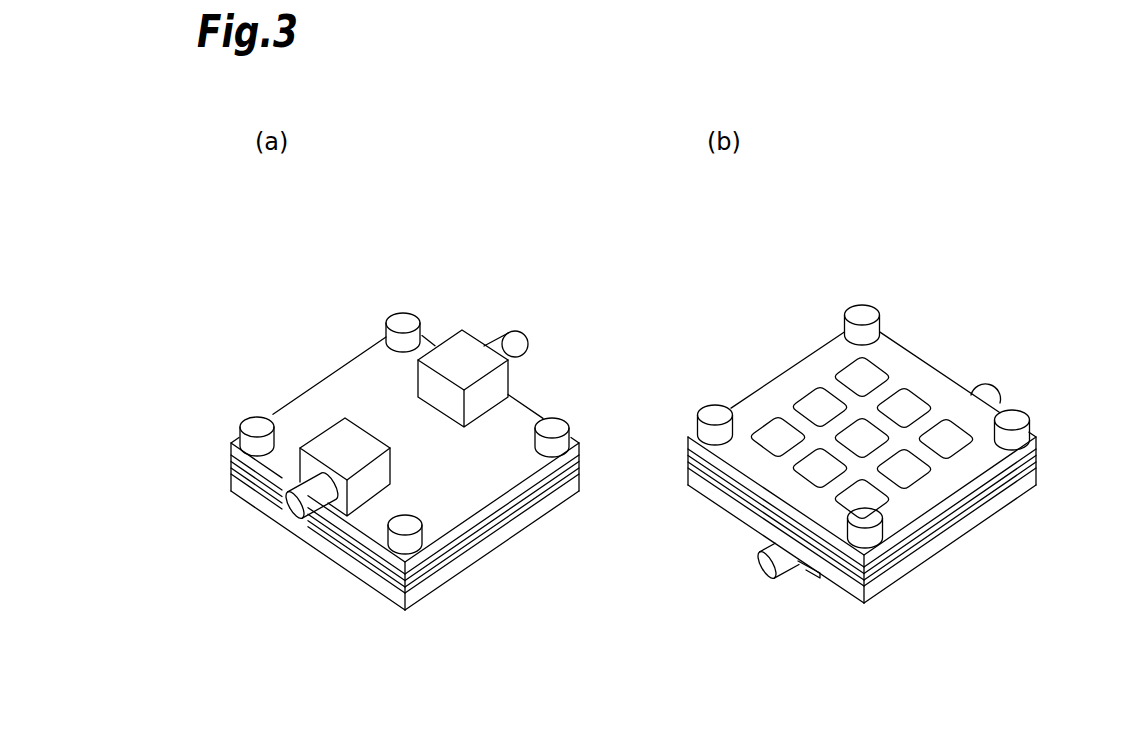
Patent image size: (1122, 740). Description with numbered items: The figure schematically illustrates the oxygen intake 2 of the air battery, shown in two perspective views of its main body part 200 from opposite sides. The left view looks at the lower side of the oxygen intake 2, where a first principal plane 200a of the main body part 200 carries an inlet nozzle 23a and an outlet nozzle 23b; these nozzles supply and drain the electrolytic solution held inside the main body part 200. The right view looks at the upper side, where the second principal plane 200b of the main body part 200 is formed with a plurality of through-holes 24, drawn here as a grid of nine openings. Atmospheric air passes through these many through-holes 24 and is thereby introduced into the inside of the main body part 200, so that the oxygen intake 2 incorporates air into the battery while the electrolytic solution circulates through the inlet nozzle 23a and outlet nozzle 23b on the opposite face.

The oxygen intake 2 is at (477, 240).
The main body part 200 is at (583, 465).
The first principal plane 200a is at (515, 418).
The second principal plane 200b is at (925, 373).
The inlet nozzle 23a is at (319, 478).
The outlet nozzle 23b is at (505, 337).
The through-holes 24 is at (853, 370).